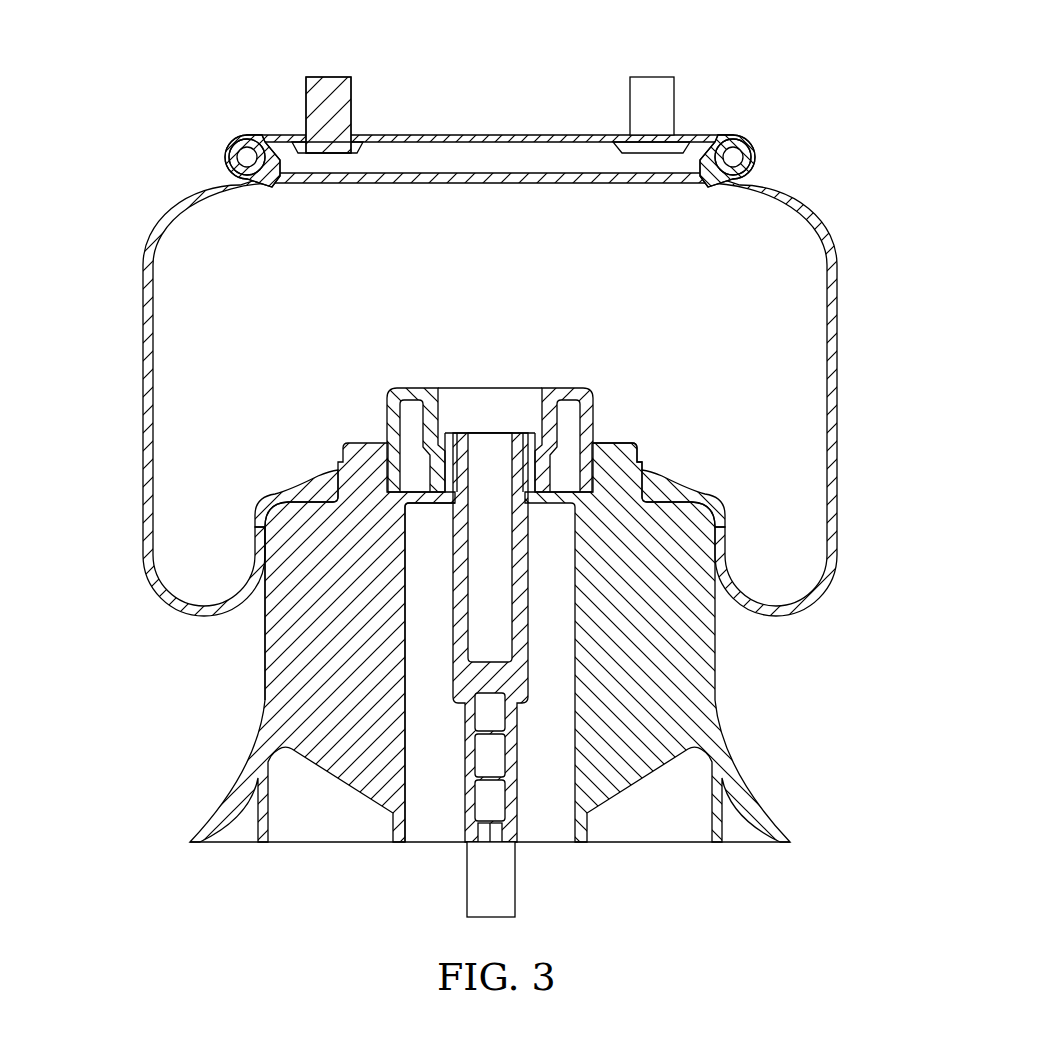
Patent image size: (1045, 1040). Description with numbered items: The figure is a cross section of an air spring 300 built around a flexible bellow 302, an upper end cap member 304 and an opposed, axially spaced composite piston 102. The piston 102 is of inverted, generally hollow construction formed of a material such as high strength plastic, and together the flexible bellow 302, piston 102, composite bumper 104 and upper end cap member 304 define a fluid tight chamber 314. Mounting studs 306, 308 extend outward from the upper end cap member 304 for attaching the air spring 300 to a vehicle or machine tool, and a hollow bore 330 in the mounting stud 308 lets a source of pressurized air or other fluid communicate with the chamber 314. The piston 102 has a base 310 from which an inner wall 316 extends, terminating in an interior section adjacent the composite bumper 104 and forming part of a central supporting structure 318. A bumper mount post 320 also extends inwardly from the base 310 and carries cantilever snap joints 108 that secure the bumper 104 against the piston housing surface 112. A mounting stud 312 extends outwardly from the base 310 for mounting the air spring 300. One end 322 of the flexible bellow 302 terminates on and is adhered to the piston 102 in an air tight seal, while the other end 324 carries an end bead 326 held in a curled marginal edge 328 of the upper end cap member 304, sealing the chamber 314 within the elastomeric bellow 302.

The air spring 300 is at (138, 90).
The flexible bellow 302 is at (838, 262).
The upper end cap member 304 is at (502, 135).
The mounting stud 306 is at (674, 107).
The mounting stud 308 is at (329, 115).
The hollow bore 330 is at (343, 103).
The other end of flexible bellow 324 is at (240, 142).
The curled marginal edge 328 is at (228, 157).
The end bead 326 is at (753, 153).
The fluid tight chamber 314 is at (510, 291).
The cantilever snap joints 108 is at (442, 444).
The composite bumper 104 is at (577, 413).
The piston housing surface 112 is at (632, 447).
The one end of flexible bellow 322 is at (293, 490).
The bumper mount post 320 is at (527, 602).
The composite piston 102 is at (718, 687).
The central supporting structure 318 is at (308, 695).
The base 310 is at (308, 843).
The inner wall 316 is at (407, 798).
The mounting stud 312 is at (515, 877).